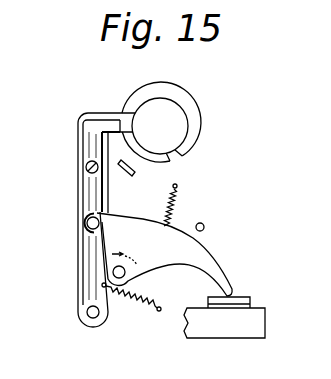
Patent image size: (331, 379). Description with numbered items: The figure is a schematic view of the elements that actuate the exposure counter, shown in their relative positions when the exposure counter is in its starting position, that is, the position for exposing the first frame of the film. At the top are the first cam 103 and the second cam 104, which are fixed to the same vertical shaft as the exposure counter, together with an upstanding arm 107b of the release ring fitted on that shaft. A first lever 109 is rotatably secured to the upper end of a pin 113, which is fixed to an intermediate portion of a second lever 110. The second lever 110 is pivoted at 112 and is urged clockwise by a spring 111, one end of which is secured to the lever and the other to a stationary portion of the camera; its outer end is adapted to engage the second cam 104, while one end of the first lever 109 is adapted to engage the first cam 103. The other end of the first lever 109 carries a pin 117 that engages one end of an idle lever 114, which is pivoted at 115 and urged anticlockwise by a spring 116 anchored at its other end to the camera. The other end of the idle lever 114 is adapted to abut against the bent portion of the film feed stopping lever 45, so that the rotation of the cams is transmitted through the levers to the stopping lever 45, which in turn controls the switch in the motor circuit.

The film feed stopping lever 45 is at (252, 317).
The first cam 103 is at (173, 112).
The second cam 104 is at (196, 130).
The upstanding arm 107b is at (138, 176).
The first lever 109 is at (82, 178).
The second lever 110 is at (78, 262).
The spring 111 is at (131, 316).
The pivot 112 is at (87, 310).
The pin 113 is at (86, 161).
The idle lever 114 is at (215, 258).
The pivot 115 is at (126, 273).
The spring 116 is at (182, 213).
The pin 117 is at (86, 219).